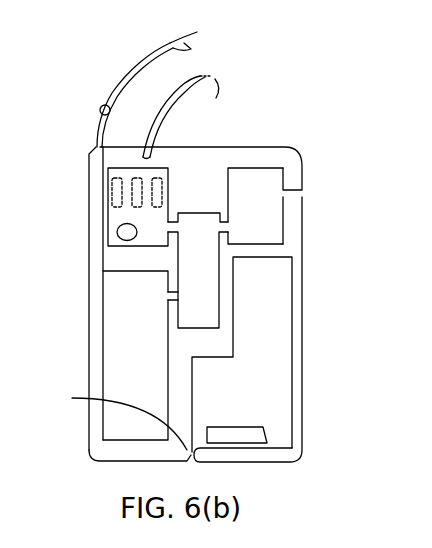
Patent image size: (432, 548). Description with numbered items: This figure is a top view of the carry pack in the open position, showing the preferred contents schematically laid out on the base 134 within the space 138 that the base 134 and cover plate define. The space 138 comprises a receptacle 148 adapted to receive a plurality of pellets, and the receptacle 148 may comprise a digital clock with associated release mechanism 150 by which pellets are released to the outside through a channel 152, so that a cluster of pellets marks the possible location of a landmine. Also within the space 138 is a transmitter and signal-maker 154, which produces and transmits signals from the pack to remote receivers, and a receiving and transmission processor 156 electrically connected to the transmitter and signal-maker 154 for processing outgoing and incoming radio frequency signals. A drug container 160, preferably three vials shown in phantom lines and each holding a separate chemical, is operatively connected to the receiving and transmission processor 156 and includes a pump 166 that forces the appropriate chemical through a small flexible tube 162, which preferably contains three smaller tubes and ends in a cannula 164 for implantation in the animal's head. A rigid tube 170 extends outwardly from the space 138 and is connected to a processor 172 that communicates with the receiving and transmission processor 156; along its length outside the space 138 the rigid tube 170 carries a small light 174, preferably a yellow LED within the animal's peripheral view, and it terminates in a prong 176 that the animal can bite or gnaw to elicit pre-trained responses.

The base 134 is at (210, 157).
The space 138 is at (207, 187).
The receptacle 148 is at (275, 332).
The digital clock with associated release mechanism 150 is at (253, 434).
The channel 152 is at (111, 420).
The transmitter and signal-maker 154 is at (268, 218).
The receiving and transmission processor 156 is at (212, 262).
The drug container 160 is at (115, 197).
The flexible tube 162 is at (173, 95).
The cannula 164 is at (222, 92).
The pump 166 is at (118, 233).
The rigid tube 170 is at (110, 97).
The processor 172 is at (118, 352).
The light 174 is at (100, 111).
The prong 176 is at (173, 33).